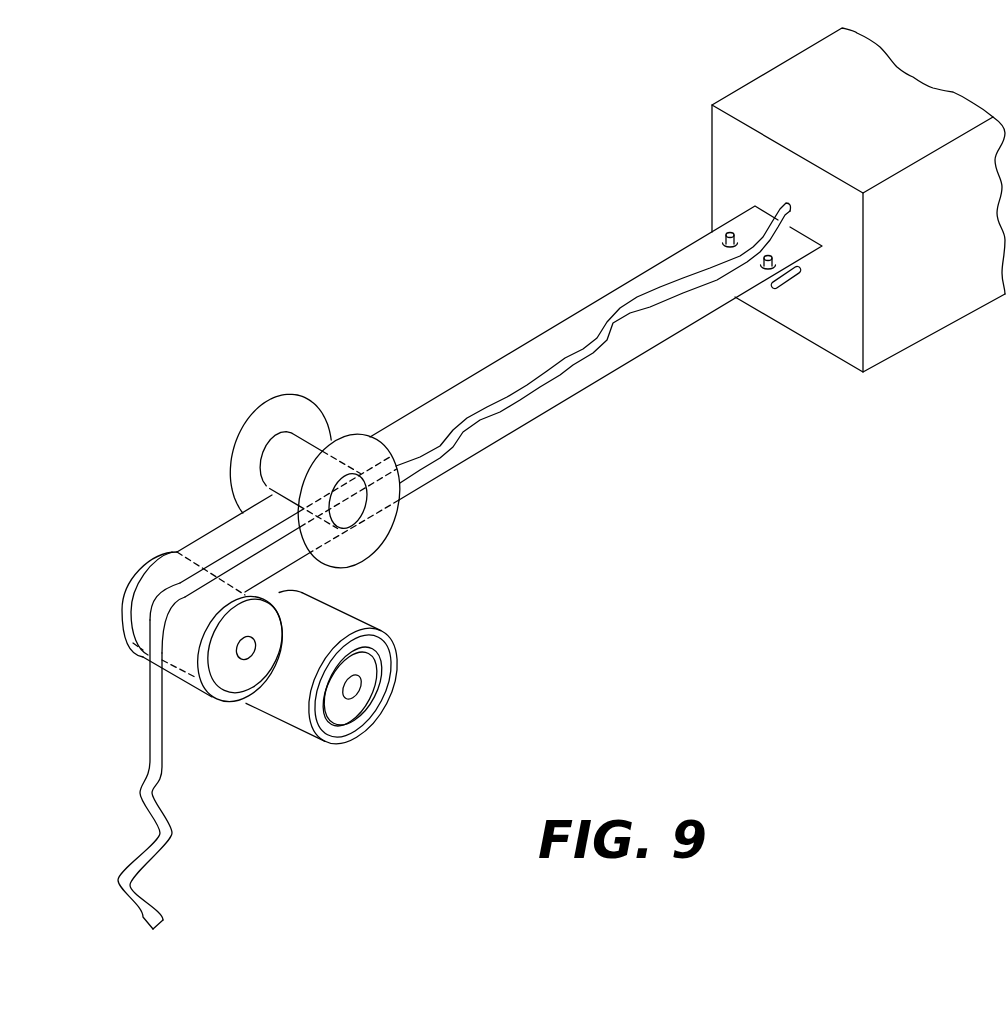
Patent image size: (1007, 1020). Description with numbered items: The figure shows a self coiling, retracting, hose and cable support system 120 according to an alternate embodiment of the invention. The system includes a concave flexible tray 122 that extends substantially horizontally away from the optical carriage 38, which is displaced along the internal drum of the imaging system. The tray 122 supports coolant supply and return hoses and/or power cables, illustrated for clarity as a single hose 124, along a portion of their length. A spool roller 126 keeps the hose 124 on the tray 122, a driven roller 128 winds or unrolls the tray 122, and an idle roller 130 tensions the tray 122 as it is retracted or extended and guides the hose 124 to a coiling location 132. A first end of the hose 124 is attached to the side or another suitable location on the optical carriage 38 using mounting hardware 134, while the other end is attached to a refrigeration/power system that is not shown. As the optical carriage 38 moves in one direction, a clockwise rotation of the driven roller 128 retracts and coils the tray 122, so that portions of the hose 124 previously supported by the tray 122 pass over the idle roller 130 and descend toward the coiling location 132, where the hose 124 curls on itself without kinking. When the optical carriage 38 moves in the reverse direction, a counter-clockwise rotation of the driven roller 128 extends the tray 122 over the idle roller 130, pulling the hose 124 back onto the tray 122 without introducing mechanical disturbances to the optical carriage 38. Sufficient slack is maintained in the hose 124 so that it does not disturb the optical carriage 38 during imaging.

The optical carriage 38 is at (948, 288).
The hose and cable support system 120 is at (370, 373).
The concave flexible tray 122 is at (524, 422).
The hose 124 is at (527, 390).
The spool roller 126 is at (360, 540).
The driven roller 128 is at (368, 673).
The idle roller 130 is at (132, 593).
The coiling location 132 is at (103, 798).
The mounting hardware 134 is at (770, 287).